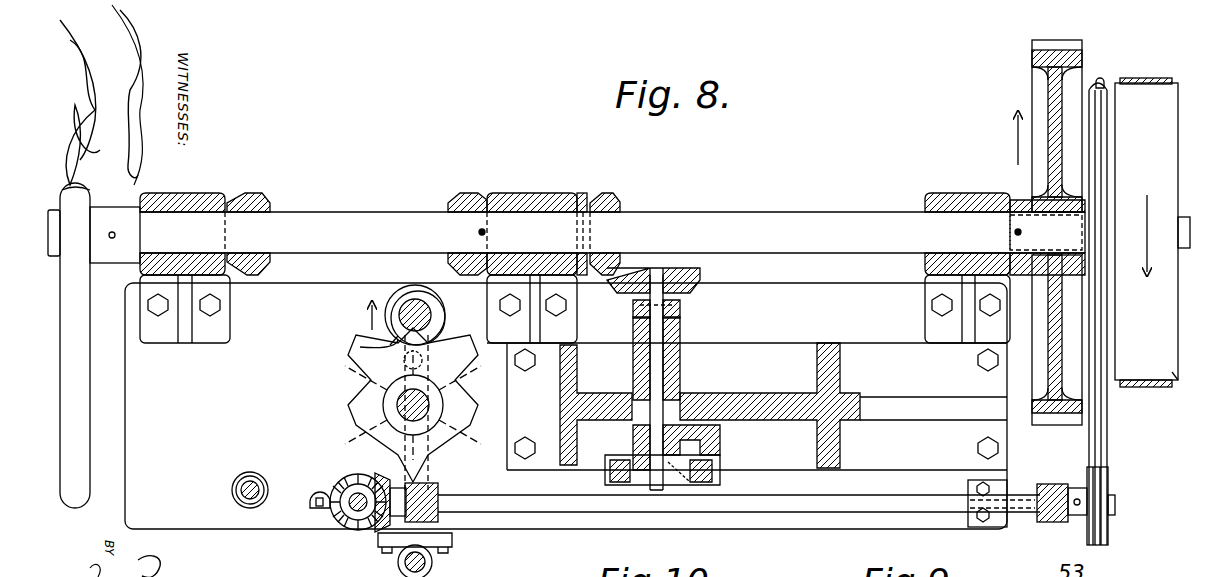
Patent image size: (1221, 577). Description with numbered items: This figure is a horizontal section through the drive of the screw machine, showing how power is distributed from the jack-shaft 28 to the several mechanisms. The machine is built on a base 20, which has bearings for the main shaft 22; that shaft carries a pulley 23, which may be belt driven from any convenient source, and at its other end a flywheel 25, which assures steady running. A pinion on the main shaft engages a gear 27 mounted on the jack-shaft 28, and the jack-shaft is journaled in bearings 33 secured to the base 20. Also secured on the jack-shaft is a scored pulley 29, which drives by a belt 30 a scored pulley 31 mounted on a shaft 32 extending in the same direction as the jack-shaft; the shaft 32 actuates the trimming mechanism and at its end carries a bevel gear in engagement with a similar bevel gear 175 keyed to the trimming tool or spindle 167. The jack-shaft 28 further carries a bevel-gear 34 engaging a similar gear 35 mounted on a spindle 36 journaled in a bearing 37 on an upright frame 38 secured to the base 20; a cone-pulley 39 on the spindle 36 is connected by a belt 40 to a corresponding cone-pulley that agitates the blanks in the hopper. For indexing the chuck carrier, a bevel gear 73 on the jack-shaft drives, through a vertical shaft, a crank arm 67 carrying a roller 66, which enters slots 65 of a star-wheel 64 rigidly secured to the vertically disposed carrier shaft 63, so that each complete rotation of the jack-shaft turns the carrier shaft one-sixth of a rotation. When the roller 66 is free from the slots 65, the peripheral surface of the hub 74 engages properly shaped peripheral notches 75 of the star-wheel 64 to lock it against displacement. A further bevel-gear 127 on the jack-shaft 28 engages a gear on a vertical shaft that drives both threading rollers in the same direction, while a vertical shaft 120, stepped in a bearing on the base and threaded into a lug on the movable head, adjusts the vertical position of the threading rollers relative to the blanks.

The base 20 is at (203, 520).
The main shaft 22 is at (1184, 218).
The pulley 23 is at (1175, 372).
The flywheel 25 is at (74, 500).
The gear 27 is at (1058, 50).
The jack-shaft 28 is at (800, 213).
The scored pulley 29 is at (1106, 82).
The belt 30 is at (1104, 444).
The scored pulley 31 is at (1108, 535).
The shaft 32 is at (500, 508).
The bearings 33 is at (195, 198).
The bevel-gear 34 is at (615, 200).
The bevel gear 35 is at (698, 290).
The spindle 36 is at (658, 358).
The bearing 37 is at (672, 383).
The upright frame 38 is at (778, 397).
The cone-pulley 39 is at (720, 452).
The belt 40 is at (612, 480).
The carrier shaft 63 is at (350, 450).
The star-wheel 64 is at (376, 405).
The slots 65 is at (320, 422).
The roller 66 is at (395, 345).
The crank arm 67 is at (385, 330).
The bevel gear 73 is at (458, 191).
The hub 74 is at (388, 312).
The notches 75 is at (360, 347).
The vertical shaft 120 is at (236, 480).
The bevel-gear 127 is at (262, 197).
The trimming tool 167 is at (332, 510).
The bevel gear 175 is at (370, 525).